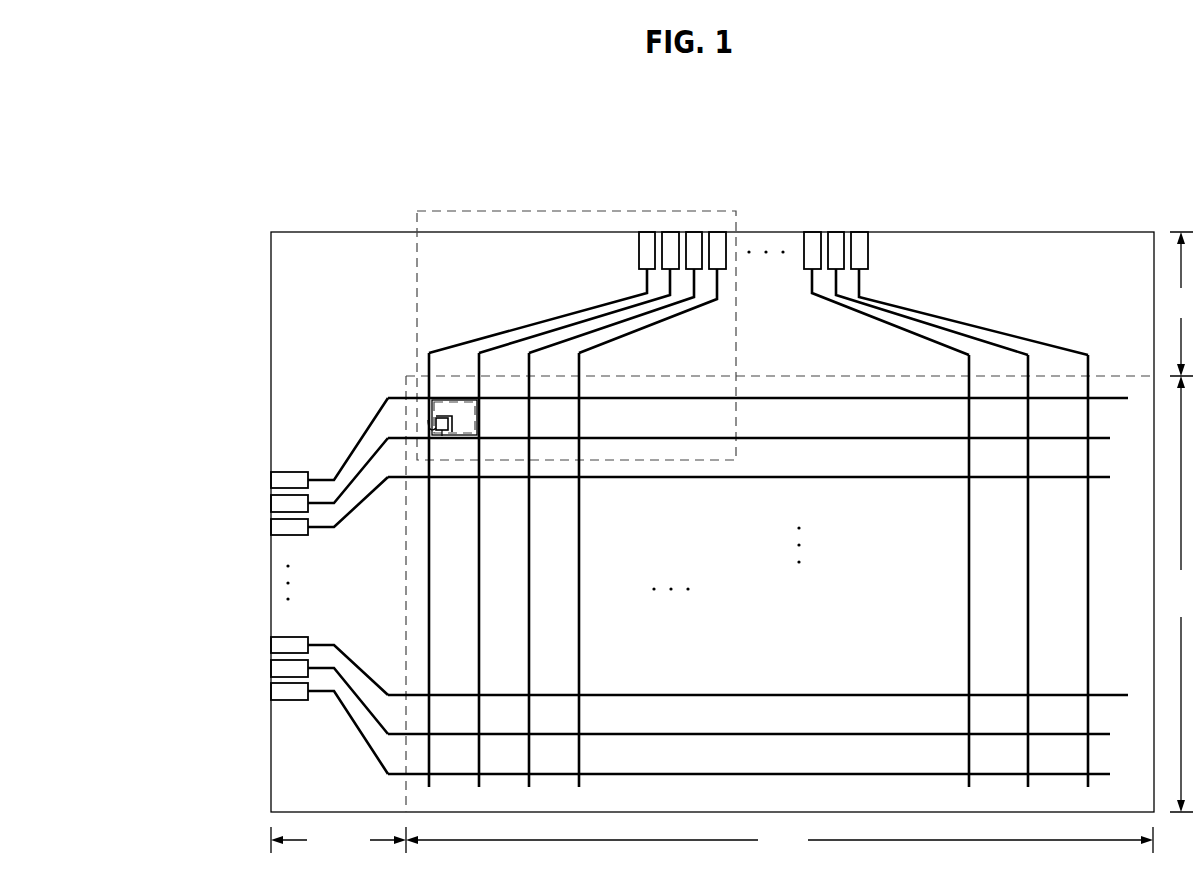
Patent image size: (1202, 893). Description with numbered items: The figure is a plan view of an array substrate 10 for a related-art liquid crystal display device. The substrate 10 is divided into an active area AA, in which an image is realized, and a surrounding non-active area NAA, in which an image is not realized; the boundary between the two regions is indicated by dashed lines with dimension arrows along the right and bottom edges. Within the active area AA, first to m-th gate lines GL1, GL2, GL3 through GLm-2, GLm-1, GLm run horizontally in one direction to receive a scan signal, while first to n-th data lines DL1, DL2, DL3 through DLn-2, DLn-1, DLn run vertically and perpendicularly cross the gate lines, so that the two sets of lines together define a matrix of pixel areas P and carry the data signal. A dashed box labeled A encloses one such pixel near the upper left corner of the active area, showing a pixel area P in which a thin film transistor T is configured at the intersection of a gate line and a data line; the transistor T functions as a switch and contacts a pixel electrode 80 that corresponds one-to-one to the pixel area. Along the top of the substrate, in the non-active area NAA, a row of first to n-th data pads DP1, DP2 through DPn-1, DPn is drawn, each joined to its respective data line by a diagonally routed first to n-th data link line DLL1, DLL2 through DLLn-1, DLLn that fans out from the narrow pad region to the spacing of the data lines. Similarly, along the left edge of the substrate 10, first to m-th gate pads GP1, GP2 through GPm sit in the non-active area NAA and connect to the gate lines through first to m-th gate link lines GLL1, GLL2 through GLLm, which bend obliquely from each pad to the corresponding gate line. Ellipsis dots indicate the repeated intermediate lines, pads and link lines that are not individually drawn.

The array substrate 10 is at (1100, 212).
The pixel electrode 80 is at (467, 421).
The enlarged region A is at (510, 210).
The pixel area P is at (478, 404).
The thin film transistor T is at (442, 435).
The non-active area NAA is at (732, 543).
The active area AA is at (800, 615).
The first gate pad GP1 is at (277, 480).
The second gate pad GP2 is at (277, 503).
The m-th gate pad GPm is at (277, 691).
The first gate link line GLL1 is at (373, 418).
The second gate link line GLL2 is at (362, 467).
The m-th gate link line GLLm is at (360, 733).
The first gate line GL1 is at (792, 395).
The second gate line GL2 is at (793, 436).
The third gate line GL3 is at (793, 476).
The (m-2)-th gate line GLm-2 is at (793, 694).
The (m-1)-th gate line GLm-1 is at (793, 733).
The m-th gate line GLm is at (793, 773).
The first data pad DP1 is at (647, 242).
The second data pad DP2 is at (670, 242).
The (n-1)-th data pad DPn-1 is at (833, 242).
The n-th data pad DPn is at (859, 240).
The first data link line DLL1 is at (517, 328).
The second data link line DLL2 is at (592, 317).
The (n-1)-th data link line DLLn-1 is at (950, 328).
The n-th data link line DLLn is at (1023, 337).
The first data line DL1 is at (432, 568).
The second data line DL2 is at (482, 568).
The third data line DL3 is at (532, 568).
The (n-2)-th data line DLn-2 is at (998, 557).
The (n-1)-th data line DLn-1 is at (1057, 557).
The n-th data line DLn is at (1090, 578).